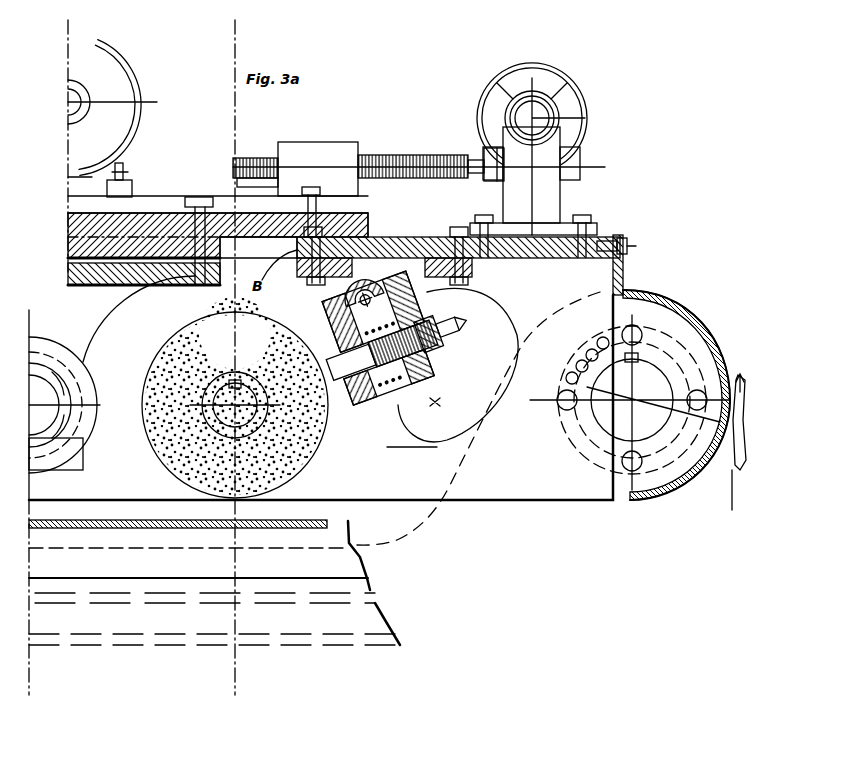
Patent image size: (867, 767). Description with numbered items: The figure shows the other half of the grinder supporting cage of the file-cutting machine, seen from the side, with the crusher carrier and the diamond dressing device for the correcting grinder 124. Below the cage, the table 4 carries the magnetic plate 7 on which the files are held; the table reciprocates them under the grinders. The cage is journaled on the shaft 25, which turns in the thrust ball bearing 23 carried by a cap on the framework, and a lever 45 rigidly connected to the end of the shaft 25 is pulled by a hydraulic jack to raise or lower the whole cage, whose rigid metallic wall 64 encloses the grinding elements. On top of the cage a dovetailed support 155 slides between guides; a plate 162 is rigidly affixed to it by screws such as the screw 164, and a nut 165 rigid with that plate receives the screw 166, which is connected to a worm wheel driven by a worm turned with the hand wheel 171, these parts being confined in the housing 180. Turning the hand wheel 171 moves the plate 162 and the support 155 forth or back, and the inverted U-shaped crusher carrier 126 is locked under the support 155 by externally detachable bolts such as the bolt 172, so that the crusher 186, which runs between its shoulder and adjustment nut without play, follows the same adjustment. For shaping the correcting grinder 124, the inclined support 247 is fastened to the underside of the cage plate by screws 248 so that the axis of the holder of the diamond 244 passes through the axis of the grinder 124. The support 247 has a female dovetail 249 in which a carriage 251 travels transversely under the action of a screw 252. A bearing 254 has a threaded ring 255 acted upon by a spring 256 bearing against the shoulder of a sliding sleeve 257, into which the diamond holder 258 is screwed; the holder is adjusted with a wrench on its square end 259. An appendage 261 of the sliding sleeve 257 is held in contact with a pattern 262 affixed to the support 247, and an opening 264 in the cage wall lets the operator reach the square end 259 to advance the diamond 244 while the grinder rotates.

The magnetic plate 7 is at (362, 568).
The thrust ball bearing 23 is at (604, 337).
The shaft 25 is at (632, 400).
The table 4 is at (748, 378).
The lever 45 is at (731, 459).
The metallic wall 64 is at (657, 308).
The correcting grinder 124 is at (190, 350).
The crusher carrier 126 is at (133, 277).
The support 155 is at (122, 223).
The plate 162 is at (255, 200).
The screw 164 is at (313, 187).
The nut 165 is at (297, 158).
The screw 166 is at (393, 153).
The hand wheel 171 is at (582, 110).
The bolt 172 is at (198, 193).
The housing 180 is at (553, 203).
The crusher 186 is at (58, 343).
The diamond 244 is at (303, 380).
The support 247 is at (413, 270).
The screw 248 is at (325, 277).
The female dovetail 249 is at (325, 318).
The carriage 251 is at (435, 352).
The screw 252 is at (377, 270).
The bearing 254 is at (372, 395).
The threaded ring 255 is at (352, 397).
The spring 256 is at (385, 383).
The sliding sleeve 257 is at (422, 373).
The diamond holder 258 is at (377, 397).
The square end 259 is at (463, 332).
The appendage 261 is at (500, 315).
The pattern 262 is at (445, 310).
The opening 264 is at (463, 413).